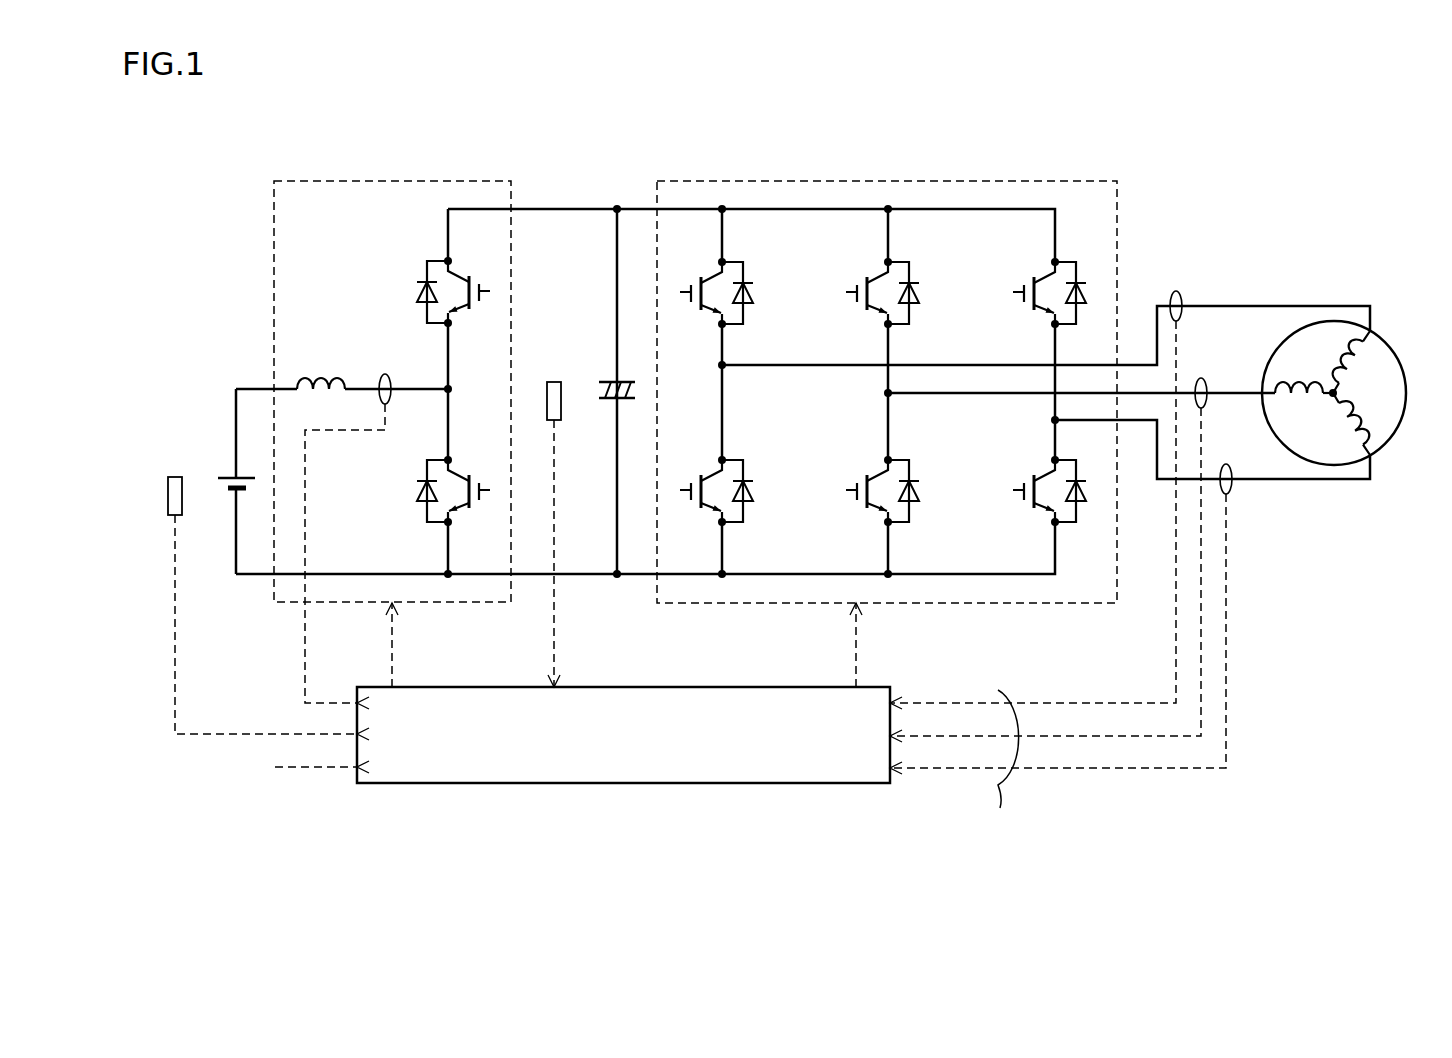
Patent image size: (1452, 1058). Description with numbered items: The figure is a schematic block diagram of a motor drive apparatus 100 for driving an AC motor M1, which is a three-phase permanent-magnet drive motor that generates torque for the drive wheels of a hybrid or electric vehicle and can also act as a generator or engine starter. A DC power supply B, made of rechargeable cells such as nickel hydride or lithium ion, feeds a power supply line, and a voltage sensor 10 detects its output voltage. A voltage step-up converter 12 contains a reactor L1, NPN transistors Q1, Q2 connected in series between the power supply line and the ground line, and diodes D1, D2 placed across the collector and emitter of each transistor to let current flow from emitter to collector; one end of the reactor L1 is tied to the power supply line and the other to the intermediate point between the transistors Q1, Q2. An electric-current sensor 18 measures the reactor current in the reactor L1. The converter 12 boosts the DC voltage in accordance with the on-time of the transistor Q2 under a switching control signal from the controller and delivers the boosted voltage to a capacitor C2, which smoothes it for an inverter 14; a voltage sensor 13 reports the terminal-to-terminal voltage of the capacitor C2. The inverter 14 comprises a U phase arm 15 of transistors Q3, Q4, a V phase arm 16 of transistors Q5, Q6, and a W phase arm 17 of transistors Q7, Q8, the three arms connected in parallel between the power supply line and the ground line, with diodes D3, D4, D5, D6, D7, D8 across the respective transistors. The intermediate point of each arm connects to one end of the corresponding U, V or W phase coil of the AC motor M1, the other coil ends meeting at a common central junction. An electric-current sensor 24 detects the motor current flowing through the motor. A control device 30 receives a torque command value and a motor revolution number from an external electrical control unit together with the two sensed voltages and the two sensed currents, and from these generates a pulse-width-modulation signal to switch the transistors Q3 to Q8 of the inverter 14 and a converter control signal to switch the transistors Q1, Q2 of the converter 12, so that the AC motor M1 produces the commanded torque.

The voltage sensor 10 is at (176, 477).
The voltage step-up converter 12 is at (373, 421).
The voltage sensor 13 is at (553, 381).
The inverter 14 is at (887, 368).
The U phase arm 15 is at (710, 377).
The V phase arm 16 is at (873, 405).
The W phase arm 17 is at (1040, 431).
The electric-current sensor 18 is at (385, 374).
The electric-current sensor 24 is at (1176, 291).
The control device 30 is at (857, 786).
The motor drive apparatus 100 is at (1190, 123).
The DC power supply B is at (218, 477).
The reactor L1 is at (316, 379).
The capacitor C2 is at (630, 381).
The AC motor M1 is at (1400, 365).
The NPN transistor Q1 is at (455, 282).
The NPN transistor Q2 is at (455, 482).
The NPN transistor Q3 is at (716, 285).
The NPN transistor Q4 is at (716, 483).
The NPN transistor Q5 is at (882, 285).
The NPN transistor Q6 is at (882, 483).
The NPN transistor Q7 is at (1049, 285).
The NPN transistor Q8 is at (1049, 483).
The diode D1 is at (410, 267).
The diode D2 is at (410, 467).
The diode D3 is at (767, 274).
The diode D4 is at (767, 470).
The diode D5 is at (932, 274).
The diode D6 is at (932, 470).
The diode D7 is at (1100, 274).
The diode D8 is at (1100, 470).